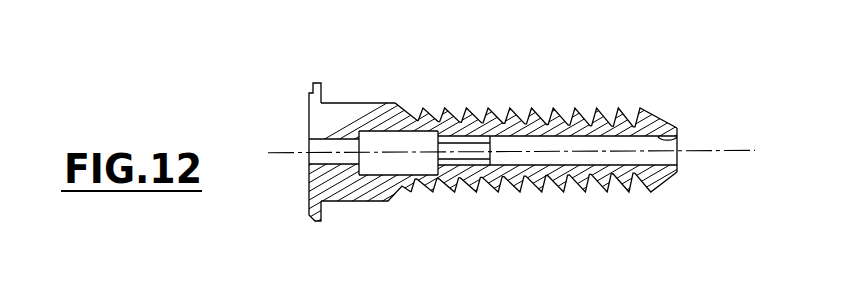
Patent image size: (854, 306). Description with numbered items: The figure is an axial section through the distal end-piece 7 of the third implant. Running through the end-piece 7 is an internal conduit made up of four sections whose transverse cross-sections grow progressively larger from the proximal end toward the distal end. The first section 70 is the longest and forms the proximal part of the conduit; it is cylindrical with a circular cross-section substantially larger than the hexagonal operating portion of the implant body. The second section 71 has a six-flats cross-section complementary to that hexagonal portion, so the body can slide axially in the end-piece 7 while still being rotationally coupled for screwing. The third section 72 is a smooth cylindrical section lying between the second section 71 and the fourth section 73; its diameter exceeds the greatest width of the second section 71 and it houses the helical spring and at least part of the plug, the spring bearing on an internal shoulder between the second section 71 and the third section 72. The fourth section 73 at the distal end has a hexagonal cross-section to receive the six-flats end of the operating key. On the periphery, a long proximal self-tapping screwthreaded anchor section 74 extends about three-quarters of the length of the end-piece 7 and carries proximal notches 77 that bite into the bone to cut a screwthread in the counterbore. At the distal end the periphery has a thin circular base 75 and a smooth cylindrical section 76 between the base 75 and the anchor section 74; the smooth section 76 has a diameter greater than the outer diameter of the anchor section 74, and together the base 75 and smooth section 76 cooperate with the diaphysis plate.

The distal end-piece 7 is at (485, 77).
The first section 70 is at (678, 140).
The second section 71 is at (465, 162).
The third section 72 is at (383, 163).
The fourth section 73 is at (309, 166).
The proximal self-tapping screwthreaded anchor section 74 is at (581, 117).
The distal thin circular base 75 is at (309, 88).
The smooth cylindrical section 76 is at (356, 117).
The proximal notches 77 is at (660, 181).